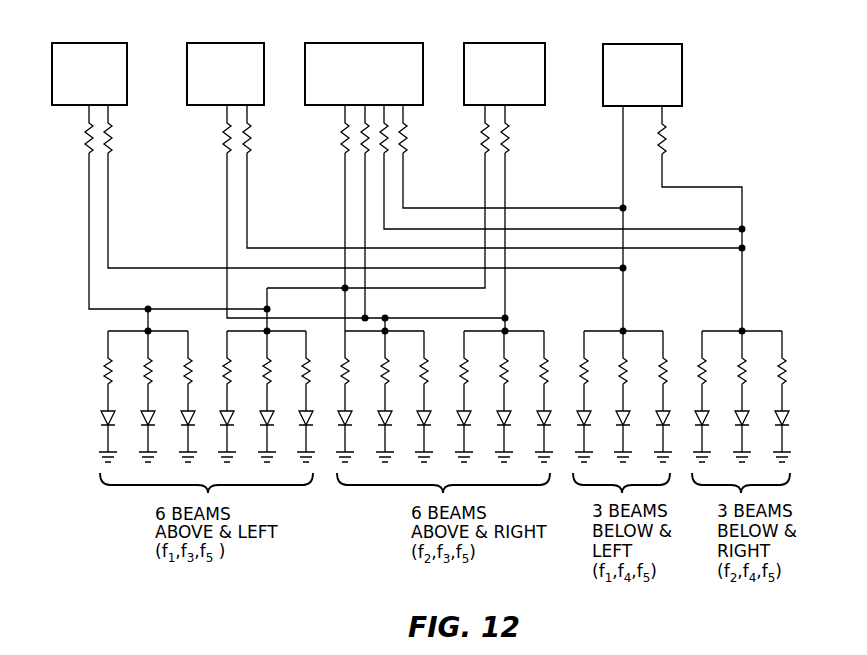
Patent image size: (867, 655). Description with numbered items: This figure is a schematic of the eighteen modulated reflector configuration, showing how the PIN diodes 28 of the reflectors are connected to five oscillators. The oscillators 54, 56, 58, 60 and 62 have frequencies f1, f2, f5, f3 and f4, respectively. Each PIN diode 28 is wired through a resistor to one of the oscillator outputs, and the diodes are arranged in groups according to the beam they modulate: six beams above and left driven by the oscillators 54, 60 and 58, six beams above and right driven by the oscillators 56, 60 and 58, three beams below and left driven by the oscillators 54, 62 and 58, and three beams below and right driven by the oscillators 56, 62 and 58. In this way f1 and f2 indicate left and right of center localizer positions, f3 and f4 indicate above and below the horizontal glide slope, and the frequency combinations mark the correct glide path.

The PIN diode 28 is at (104, 421).
The oscillator 54 is at (107, 43).
The oscillator 56 is at (240, 43).
The oscillator 58 is at (367, 43).
The oscillator 60 is at (485, 43).
The oscillator 62 is at (640, 44).